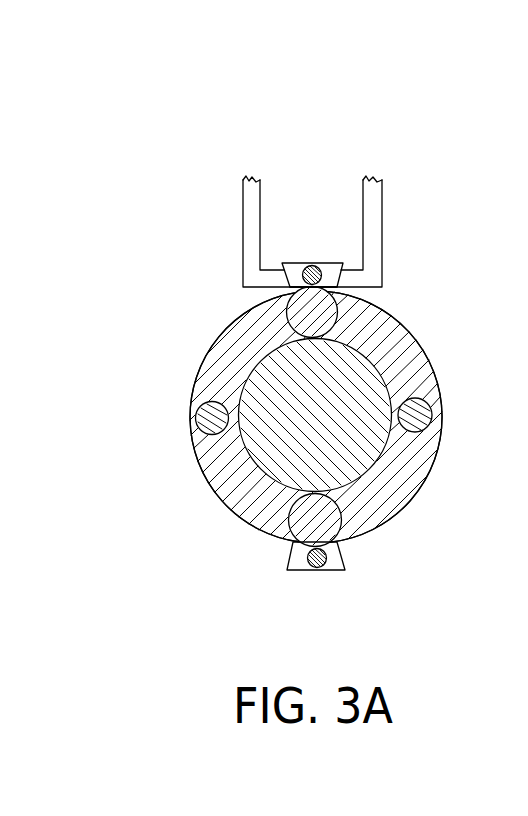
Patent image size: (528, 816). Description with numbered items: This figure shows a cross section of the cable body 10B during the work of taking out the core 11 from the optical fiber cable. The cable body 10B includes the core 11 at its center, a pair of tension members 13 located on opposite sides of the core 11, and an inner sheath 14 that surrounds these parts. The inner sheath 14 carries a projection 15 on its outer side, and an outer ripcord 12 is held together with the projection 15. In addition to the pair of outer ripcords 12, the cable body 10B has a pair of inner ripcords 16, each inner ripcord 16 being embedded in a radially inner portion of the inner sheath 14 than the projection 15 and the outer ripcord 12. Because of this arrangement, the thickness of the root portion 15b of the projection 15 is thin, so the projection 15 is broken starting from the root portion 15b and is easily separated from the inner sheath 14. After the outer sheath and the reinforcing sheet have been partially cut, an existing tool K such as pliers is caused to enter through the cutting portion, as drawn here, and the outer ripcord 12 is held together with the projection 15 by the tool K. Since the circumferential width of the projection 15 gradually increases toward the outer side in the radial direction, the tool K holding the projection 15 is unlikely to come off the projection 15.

The cable body 10B is at (196, 275).
The tool K is at (382, 228).
The projection 15 is at (297, 270).
The root portion 15b is at (291, 287).
The outer ripcord 12 is at (313, 266).
The inner ripcord 16 is at (323, 313).
The tension member 13 is at (212, 418).
The inner sheath 14 is at (222, 480).
The core 11 is at (268, 448).